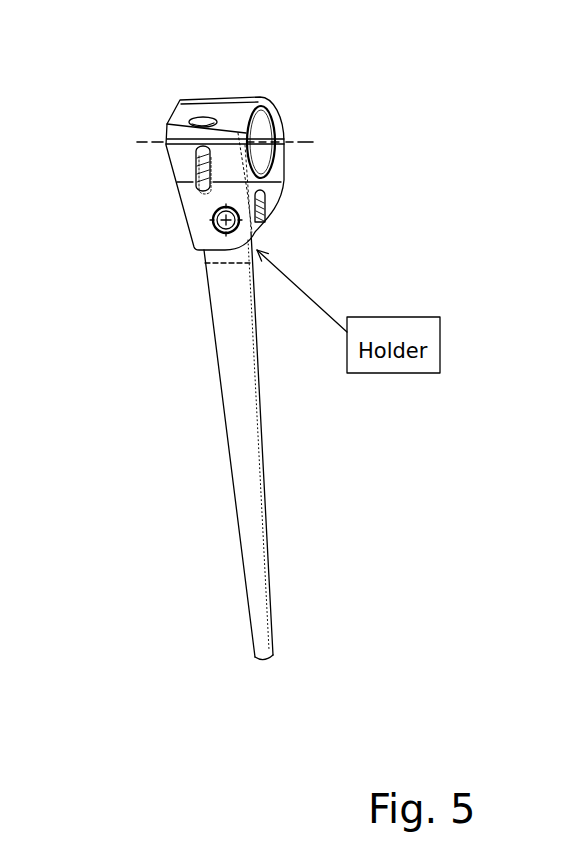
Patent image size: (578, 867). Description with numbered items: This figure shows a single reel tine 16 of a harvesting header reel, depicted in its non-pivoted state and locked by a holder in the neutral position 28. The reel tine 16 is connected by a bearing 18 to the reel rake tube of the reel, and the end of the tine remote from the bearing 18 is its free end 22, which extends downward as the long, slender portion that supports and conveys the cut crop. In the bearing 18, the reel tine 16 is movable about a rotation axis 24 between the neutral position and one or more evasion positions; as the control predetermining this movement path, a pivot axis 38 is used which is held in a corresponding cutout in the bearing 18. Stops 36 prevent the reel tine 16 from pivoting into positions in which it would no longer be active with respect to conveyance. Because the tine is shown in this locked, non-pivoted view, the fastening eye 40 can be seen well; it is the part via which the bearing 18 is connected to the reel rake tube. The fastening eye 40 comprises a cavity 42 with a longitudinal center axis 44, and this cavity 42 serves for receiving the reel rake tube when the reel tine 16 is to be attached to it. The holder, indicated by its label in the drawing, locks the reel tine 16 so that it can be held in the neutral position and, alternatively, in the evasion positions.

The reel tine 16 is at (252, 462).
The bearing 18 is at (195, 209).
The free end 22 is at (263, 650).
The rotation axis 24 is at (296, 243).
The neutral position 28 is at (348, 628).
The stops 36 is at (268, 198).
The pivot axis 38 is at (238, 226).
The fastening eye 40 is at (267, 110).
The cavity 42 is at (263, 156).
The longitudinal center axis 44 is at (152, 140).